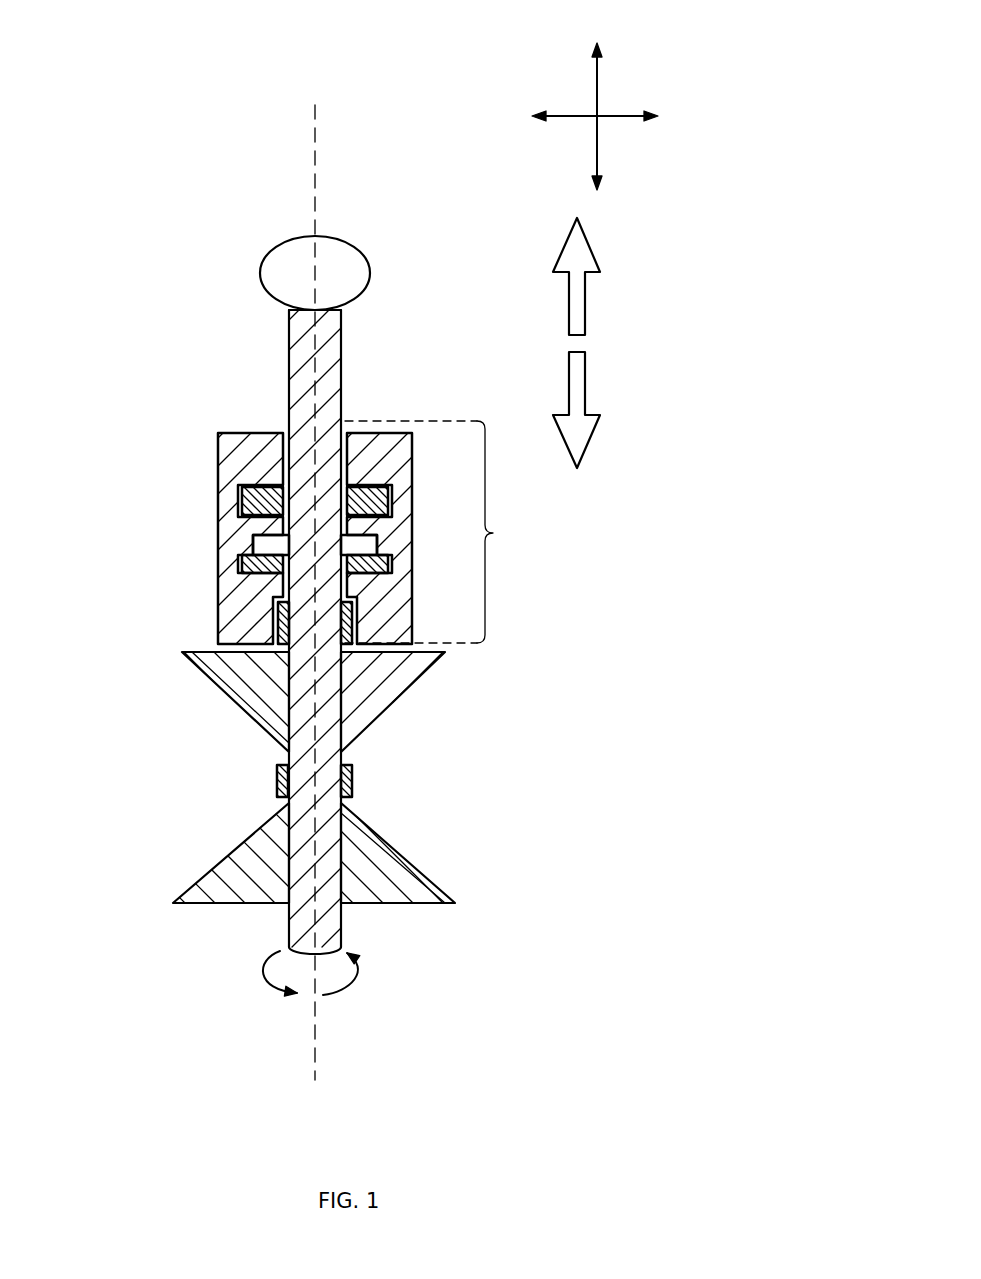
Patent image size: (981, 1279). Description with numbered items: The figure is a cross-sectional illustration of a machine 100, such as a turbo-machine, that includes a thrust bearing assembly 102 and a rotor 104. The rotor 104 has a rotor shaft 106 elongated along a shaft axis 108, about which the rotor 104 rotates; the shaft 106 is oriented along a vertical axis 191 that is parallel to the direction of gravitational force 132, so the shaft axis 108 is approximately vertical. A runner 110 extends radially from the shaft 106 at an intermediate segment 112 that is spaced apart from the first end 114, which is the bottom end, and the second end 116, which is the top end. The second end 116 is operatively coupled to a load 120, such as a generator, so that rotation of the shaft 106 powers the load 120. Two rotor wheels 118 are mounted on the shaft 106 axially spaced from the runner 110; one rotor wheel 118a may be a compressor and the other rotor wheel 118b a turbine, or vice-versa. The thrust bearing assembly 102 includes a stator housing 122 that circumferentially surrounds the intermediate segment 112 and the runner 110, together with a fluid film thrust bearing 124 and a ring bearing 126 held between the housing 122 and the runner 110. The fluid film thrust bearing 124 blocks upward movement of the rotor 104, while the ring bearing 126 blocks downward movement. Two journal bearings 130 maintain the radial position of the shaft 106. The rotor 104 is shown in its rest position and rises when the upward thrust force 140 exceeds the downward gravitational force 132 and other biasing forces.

The machine 100 is at (157, 65).
The thrust bearing assembly 102 is at (210, 498).
The rotor 104 is at (282, 373).
The rotor shaft 106 is at (342, 383).
The shaft axis 108 is at (317, 1032).
The runner 110 is at (268, 545).
The intermediate segment 112 is at (443, 532).
The first end 114 is at (280, 940).
The second end 116 is at (348, 320).
The rotor wheels 118 is at (197, 667).
The rotor wheel 118a is at (208, 873).
The rotor wheel 118b is at (207, 678).
The load 120 is at (370, 273).
The stator housing 122 is at (385, 455).
The fluid film thrust bearing 124 is at (377, 503).
The ring bearing 126 is at (383, 567).
The journal bearings 130 is at (273, 619).
The gravitational force 132 is at (587, 382).
The thrust force 140 is at (587, 303).
The vertical axis 191 is at (598, 80).